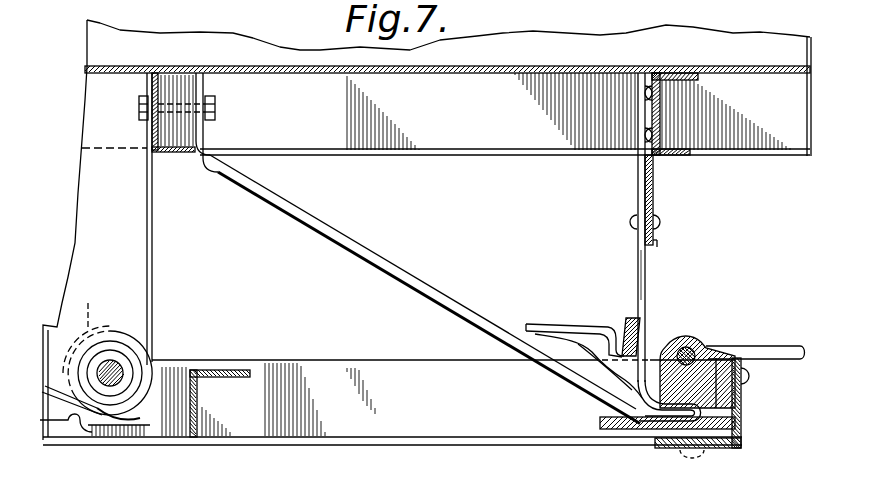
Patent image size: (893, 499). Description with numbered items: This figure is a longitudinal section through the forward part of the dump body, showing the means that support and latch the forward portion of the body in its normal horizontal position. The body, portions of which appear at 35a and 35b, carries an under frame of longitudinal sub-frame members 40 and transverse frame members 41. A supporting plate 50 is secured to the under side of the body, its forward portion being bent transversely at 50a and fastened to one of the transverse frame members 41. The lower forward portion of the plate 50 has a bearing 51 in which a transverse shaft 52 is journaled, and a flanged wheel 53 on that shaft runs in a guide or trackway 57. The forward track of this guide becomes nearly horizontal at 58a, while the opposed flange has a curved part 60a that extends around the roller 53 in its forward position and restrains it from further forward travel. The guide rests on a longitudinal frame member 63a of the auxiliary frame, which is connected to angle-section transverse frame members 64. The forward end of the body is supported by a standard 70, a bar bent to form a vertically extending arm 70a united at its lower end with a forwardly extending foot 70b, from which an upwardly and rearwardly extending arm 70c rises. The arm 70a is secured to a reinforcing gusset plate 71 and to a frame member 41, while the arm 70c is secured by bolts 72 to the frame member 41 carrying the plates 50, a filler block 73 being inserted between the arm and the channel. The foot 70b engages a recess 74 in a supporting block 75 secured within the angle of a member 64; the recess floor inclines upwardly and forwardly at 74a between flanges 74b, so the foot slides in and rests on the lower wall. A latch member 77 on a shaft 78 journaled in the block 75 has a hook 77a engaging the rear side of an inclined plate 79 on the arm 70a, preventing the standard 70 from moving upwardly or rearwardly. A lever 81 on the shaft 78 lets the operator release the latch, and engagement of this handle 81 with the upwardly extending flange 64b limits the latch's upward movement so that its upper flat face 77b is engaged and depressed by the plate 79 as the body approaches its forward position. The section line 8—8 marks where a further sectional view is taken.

The section line 8- 8 is at (548, 271).
The roof sheathing 35a is at (517, 68).
The roof 35b is at (626, 35).
The longitudinal sub-frame member 40 is at (486, 96).
The transverse frame member 41 is at (152, 146).
The supporting plate 50 is at (79, 230).
The transversely bent forward portion 50a is at (155, 224).
The bearing 51 is at (120, 355).
The transverse shaft 52 is at (124, 366).
The flanged wheel 53 is at (86, 340).
The guide or trackway 57 is at (60, 440).
The lower forward end of forward track member 58a is at (72, 428).
The curved part of guide flange 60a is at (162, 384).
The longitudinal frame member 63a is at (415, 427).
The transverse auxiliary frame member 64 is at (742, 447).
The upwardly extending flange 64b is at (742, 396).
The standard 70 is at (654, 275).
The vertically extending arm 70a is at (645, 258).
The forwardly extending foot 70b is at (630, 430).
The upwardly and rearwardly extending arm 70c is at (320, 228).
The reinforcing gusset plate 71 is at (655, 185).
The bolt 72 is at (216, 106).
The filler block 73 is at (178, 153).
The recess 74 is at (712, 412).
The inclined portion of recess lower face 74a is at (598, 440).
The guide flange 74b is at (622, 421).
The supporting block 75 is at (720, 452).
The latch member 77 is at (589, 327).
The hook 77a is at (612, 326).
The upper flat face 77b is at (572, 326).
The shaft 78 is at (694, 348).
The plate 79 is at (642, 322).
The lever 81 is at (783, 346).